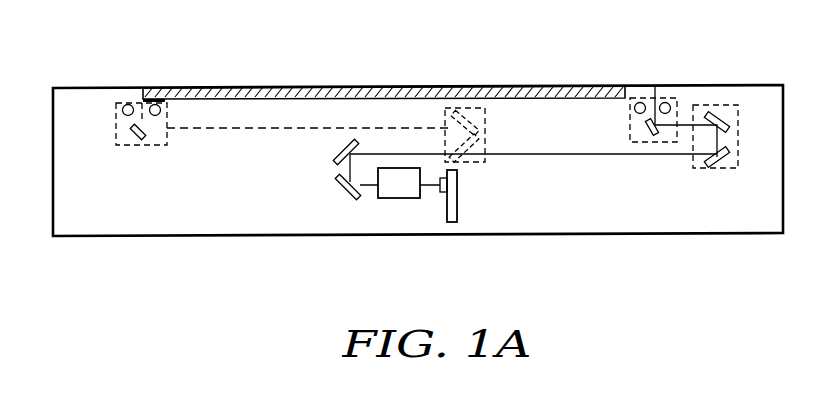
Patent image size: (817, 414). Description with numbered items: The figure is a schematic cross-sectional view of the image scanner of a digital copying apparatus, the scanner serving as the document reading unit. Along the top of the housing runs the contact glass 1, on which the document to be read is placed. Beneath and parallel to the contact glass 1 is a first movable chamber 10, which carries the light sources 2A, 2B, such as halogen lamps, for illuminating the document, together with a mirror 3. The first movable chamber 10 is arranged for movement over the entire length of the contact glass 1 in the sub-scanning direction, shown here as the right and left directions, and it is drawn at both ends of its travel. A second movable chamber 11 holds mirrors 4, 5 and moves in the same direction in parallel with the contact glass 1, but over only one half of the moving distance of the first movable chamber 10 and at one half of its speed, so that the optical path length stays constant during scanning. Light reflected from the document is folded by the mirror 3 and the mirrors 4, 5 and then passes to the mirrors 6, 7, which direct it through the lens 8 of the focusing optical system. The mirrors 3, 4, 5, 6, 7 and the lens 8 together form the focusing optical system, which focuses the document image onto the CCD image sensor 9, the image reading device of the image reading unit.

The contact glass 1 is at (508, 86).
The light source 2A is at (122, 113).
The light source 2B is at (162, 112).
The mirror 3 is at (134, 137).
The mirror 4 is at (480, 121).
The mirror 5 is at (475, 160).
The mirror 6 is at (336, 150).
The mirror 7 is at (338, 190).
The lens 8 is at (384, 198).
The CCD image sensor 9 is at (440, 188).
The first movable chamber 10 is at (155, 147).
The second movable chamber 11 is at (487, 142).